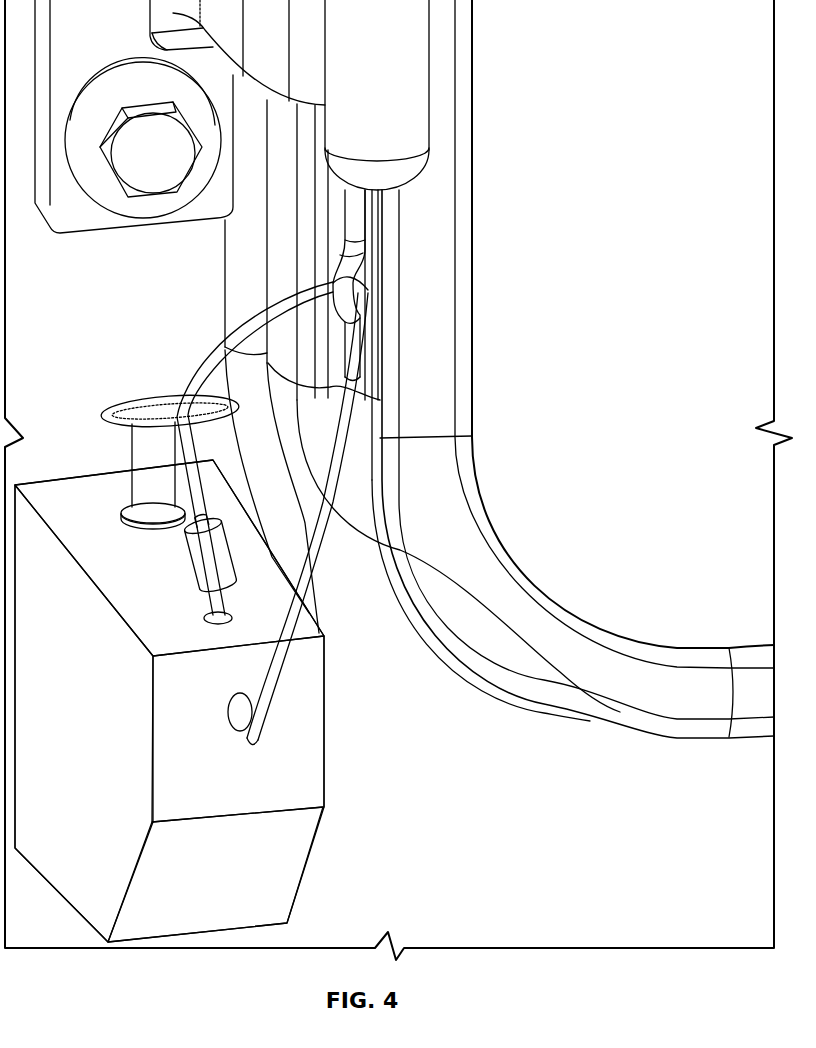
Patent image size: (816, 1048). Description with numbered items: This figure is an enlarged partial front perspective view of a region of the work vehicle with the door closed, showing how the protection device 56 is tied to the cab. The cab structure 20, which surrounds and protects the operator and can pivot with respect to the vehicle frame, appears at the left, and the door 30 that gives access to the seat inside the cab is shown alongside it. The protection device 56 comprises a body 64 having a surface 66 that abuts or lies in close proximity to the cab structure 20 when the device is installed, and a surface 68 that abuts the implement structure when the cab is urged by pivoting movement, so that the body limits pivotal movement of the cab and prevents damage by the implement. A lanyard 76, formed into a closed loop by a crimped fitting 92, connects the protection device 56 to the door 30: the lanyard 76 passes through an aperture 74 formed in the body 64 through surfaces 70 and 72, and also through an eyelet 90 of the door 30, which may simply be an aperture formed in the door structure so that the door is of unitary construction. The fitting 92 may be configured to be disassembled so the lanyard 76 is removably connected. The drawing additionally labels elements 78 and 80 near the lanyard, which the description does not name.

The cab structure 20 is at (58, 305).
The door 30 is at (604, 267).
The protection device 56 is at (33, 478).
The body 64 is at (69, 725).
The surface 66 is at (78, 477).
The surface 68 is at (186, 889).
The surface 70 is at (171, 729).
The surface 72 is at (148, 619).
The aperture 74 is at (230, 729).
The lanyard 76 is at (280, 683).
The post 78 is at (128, 492).
The ring 80 is at (112, 408).
The eyelet 90 is at (350, 278).
The crimped fitting 92 is at (188, 547).